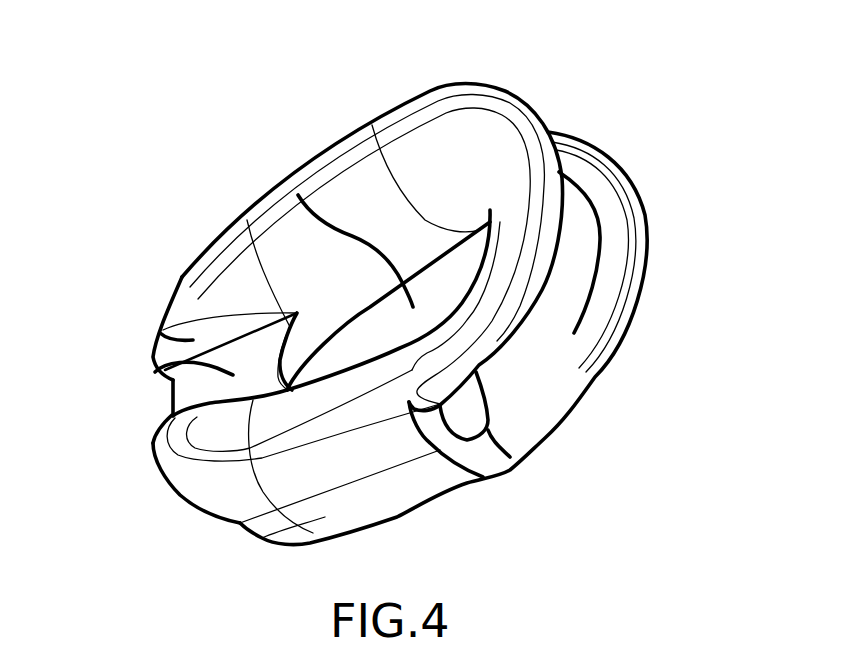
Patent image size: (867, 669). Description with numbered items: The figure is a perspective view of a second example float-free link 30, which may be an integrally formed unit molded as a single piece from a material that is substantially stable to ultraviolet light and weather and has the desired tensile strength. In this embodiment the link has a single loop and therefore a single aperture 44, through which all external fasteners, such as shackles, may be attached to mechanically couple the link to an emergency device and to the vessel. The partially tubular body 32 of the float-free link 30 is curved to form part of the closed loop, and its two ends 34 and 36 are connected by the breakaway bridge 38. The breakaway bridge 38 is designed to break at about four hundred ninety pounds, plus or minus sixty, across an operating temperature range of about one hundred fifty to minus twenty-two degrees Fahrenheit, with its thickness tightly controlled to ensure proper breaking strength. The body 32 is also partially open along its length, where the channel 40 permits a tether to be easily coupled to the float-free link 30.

The float-free link 30 is at (617, 101).
The body 32 is at (385, 496).
The end 34 is at (162, 338).
The end 36 is at (170, 408).
The breakaway bridge 38 is at (160, 367).
The channel 40 is at (573, 302).
The aperture 44 is at (298, 195).